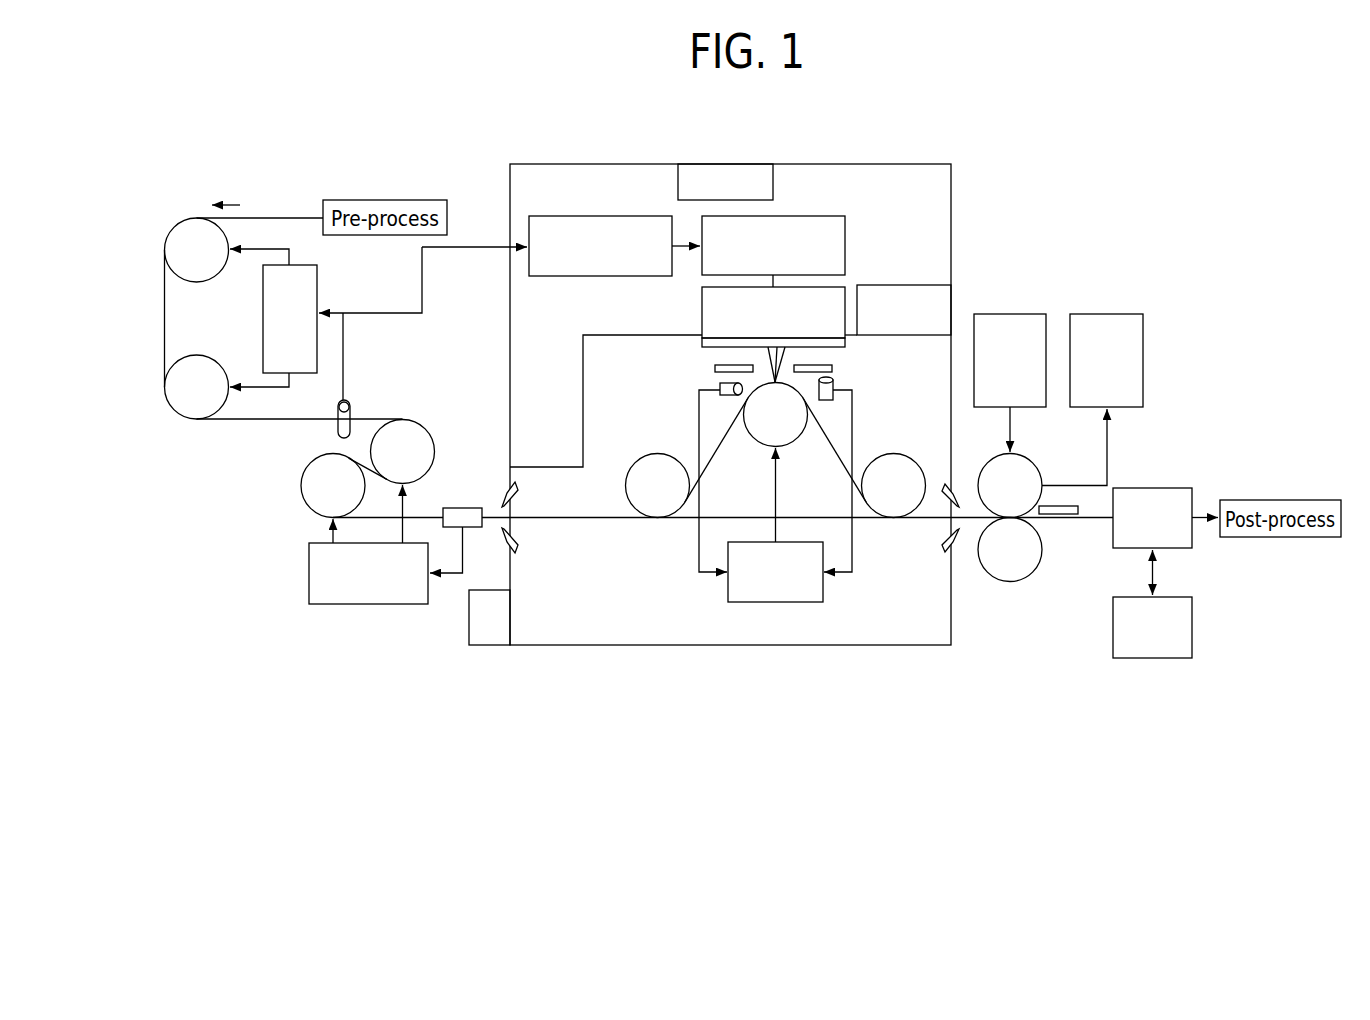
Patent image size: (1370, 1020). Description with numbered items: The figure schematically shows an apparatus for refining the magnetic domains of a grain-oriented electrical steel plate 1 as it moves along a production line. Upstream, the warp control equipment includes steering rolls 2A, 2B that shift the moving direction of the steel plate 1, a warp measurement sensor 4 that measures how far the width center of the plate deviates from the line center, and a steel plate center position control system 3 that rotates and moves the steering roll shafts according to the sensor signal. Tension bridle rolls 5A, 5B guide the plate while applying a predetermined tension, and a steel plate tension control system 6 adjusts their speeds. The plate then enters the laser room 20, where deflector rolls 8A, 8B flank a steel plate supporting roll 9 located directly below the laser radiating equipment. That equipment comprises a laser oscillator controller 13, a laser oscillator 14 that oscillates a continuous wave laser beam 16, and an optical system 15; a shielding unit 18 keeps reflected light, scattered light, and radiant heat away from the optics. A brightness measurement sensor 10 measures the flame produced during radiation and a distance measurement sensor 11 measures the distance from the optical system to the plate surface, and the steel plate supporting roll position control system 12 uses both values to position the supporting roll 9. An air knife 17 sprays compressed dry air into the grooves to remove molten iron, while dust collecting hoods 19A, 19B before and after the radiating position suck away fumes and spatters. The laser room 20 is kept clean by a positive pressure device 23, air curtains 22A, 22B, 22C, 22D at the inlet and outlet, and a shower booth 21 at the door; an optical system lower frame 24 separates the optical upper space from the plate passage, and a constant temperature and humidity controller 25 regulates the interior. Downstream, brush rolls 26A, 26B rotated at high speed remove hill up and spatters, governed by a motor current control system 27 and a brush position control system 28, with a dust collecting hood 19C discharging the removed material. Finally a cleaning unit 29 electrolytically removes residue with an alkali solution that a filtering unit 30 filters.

The steel plate 1 is at (284, 217).
The steering roll 2A is at (192, 233).
The steering roll 2B is at (190, 407).
The steel plate center position control system 3 is at (262, 313).
The warp measurement sensor 4 is at (353, 413).
The tension bridle roll 5A is at (417, 440).
The tension bridle roll 5B is at (310, 487).
The steel plate tension control system 6 is at (367, 606).
The deflector roll 8A is at (653, 467).
The deflector roll 8B is at (892, 467).
The steel plate supporting roll 9 is at (763, 436).
The brightness measurement sensor 10 is at (728, 396).
The distance measurement sensor 11 is at (827, 401).
The steel plate supporting roll position control system 12 is at (804, 541).
The laser oscillator controller 13 is at (600, 215).
The laser oscillator 14 is at (808, 215).
The optical system 15 is at (701, 310).
The laser beam 16 is at (767, 352).
The air knife 17 is at (784, 351).
The shielding unit 18 is at (701, 345).
The dust collecting hood 19A is at (713, 378).
The dust collecting hood 19B is at (838, 376).
The dust collecting hood 19C is at (1068, 515).
The laser room 20 is at (701, 646).
The shower booth 21 is at (486, 646).
The air curtain 22A is at (520, 488).
The air curtain 22B is at (520, 545).
The air curtain 22C is at (958, 483).
The air curtain 22D is at (958, 556).
The positive pressure device 23 is at (726, 163).
The optical system lower frame 24 is at (594, 334).
The constant temperature and humidity controller 25 is at (903, 284).
The brush roll 26A is at (1025, 466).
The brush roll 26B is at (1025, 571).
The motor current control system 27 is at (1106, 313).
The brush position control system 28 is at (1010, 313).
The cleaning unit 29 is at (1153, 487).
The filtering unit 30 is at (1153, 659).